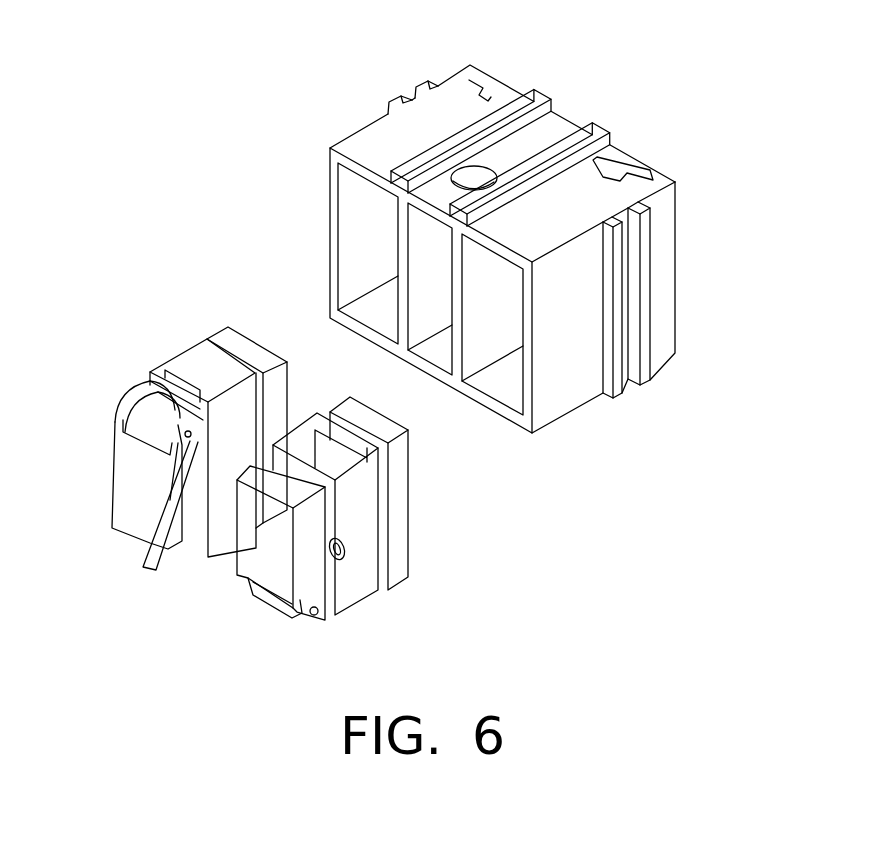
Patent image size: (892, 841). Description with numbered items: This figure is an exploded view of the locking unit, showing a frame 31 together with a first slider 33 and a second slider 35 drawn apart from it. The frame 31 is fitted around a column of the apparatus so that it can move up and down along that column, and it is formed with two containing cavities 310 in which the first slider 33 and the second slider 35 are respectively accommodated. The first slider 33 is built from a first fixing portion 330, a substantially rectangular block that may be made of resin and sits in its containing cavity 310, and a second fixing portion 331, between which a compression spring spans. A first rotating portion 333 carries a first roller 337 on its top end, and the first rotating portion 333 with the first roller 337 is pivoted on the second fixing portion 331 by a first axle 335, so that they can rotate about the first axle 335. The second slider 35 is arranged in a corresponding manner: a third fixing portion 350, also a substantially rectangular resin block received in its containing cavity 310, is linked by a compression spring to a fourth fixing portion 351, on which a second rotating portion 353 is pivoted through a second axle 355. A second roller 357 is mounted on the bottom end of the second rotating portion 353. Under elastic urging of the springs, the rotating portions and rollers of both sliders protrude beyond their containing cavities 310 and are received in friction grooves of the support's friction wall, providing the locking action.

The frame 31 is at (510, 261).
The containing cavities 310 is at (368, 233).
The first slider 33 is at (156, 437).
The first fixing portion 330 is at (232, 338).
The second fixing portion 331 is at (202, 363).
The first rotating portion 333 is at (128, 480).
The first axle 335 is at (152, 568).
The first roller 337 is at (150, 407).
The second slider 35 is at (379, 541).
The third fixing portion 350 is at (400, 537).
The fourth fixing portion 351 is at (357, 596).
The second rotating portion 353 is at (298, 576).
The second axle 355 is at (316, 616).
The second roller 357 is at (268, 604).